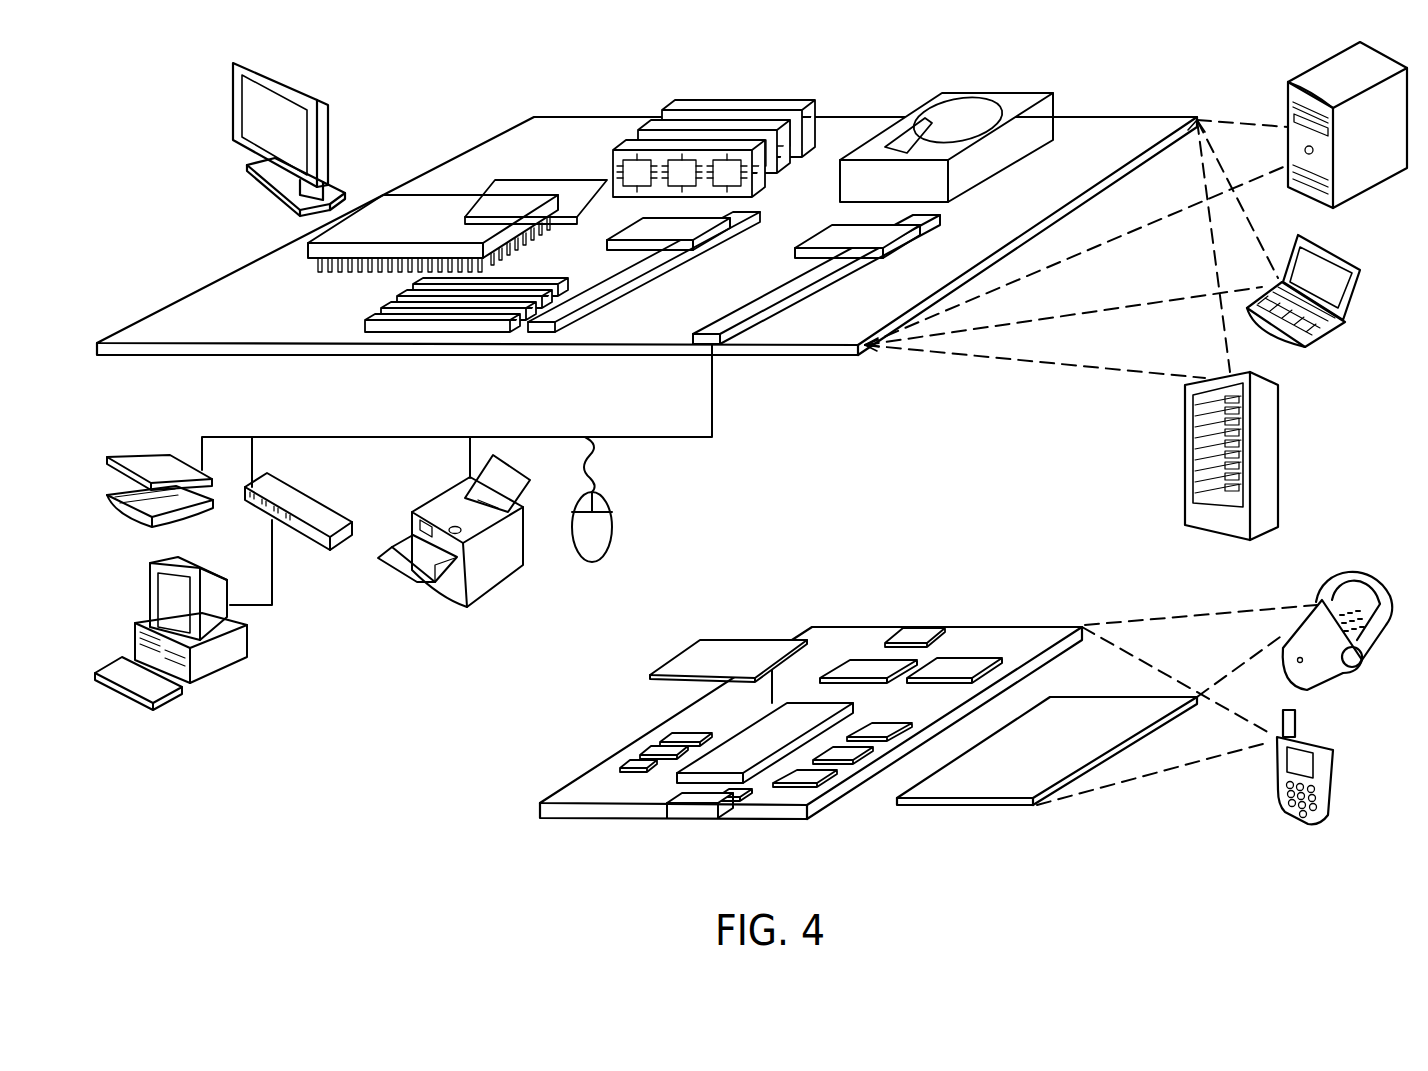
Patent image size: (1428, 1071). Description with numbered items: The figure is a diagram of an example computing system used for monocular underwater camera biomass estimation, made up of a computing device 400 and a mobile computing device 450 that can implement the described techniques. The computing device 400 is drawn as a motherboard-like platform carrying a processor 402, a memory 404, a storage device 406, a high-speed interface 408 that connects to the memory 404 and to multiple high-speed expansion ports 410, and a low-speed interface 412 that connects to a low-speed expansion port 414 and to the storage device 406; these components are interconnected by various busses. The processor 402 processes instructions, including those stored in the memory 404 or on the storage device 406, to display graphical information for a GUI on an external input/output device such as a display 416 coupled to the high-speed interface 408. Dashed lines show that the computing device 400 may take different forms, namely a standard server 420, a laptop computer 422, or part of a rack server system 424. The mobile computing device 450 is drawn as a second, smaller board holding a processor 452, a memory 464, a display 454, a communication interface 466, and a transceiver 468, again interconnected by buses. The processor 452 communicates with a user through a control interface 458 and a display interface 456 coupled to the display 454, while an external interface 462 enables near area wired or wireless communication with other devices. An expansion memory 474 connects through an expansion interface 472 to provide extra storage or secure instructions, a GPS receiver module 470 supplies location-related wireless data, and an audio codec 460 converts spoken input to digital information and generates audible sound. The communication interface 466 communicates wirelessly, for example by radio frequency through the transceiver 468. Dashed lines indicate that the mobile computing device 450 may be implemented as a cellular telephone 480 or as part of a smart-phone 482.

The computing device 400 is at (160, 80).
The processor 402 is at (317, 248).
The memory 404 is at (678, 110).
The storage device 406 is at (935, 98).
The high-speed interface 408 is at (640, 232).
The high-speed expansion ports 410 is at (397, 312).
The low-speed interface 412 is at (833, 233).
The low-speed expansion port 414 is at (720, 343).
The display 416 is at (307, 73).
The standard server 420 is at (1288, 100).
The laptop computer 422 is at (1320, 328).
The rack server system 424 is at (1185, 482).
The mobile computing device 450 is at (513, 773).
The processor 452 is at (740, 773).
The display 454 is at (997, 788).
The display interface 456 is at (805, 783).
The control interface 458 is at (840, 755).
The audio codec 460 is at (878, 730).
The external interface 462 is at (697, 808).
The memory 464 is at (638, 760).
The communication interface 466 is at (870, 667).
The transceiver 468 is at (953, 667).
The GPS receiver module 470 is at (923, 628).
The expansion interface 472 is at (772, 640).
The expansion memory 474 is at (705, 640).
The cellular telephone 480 is at (1340, 573).
The smart-phone 482 is at (1280, 770).